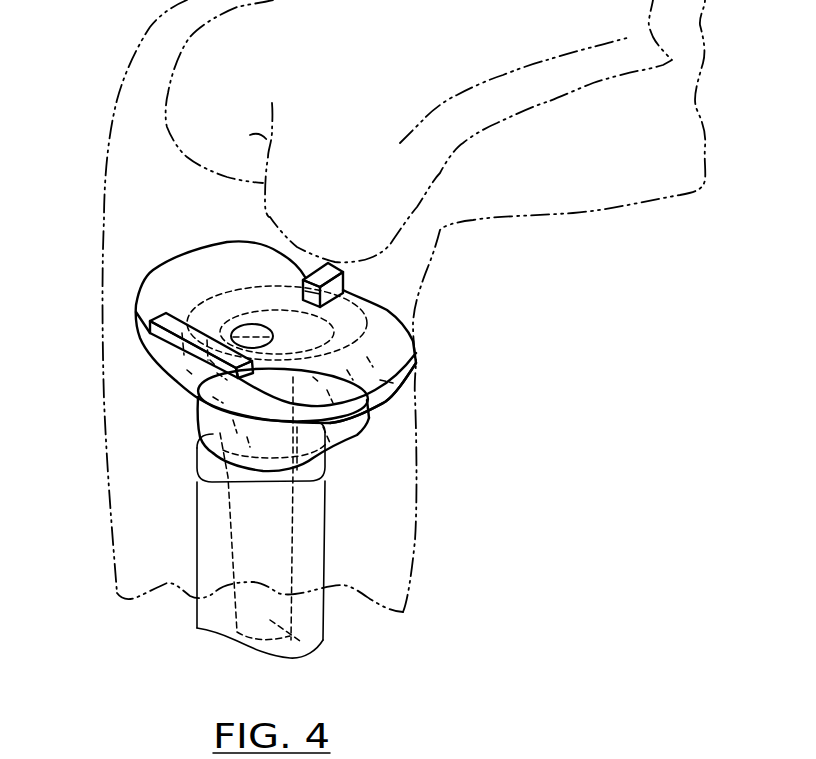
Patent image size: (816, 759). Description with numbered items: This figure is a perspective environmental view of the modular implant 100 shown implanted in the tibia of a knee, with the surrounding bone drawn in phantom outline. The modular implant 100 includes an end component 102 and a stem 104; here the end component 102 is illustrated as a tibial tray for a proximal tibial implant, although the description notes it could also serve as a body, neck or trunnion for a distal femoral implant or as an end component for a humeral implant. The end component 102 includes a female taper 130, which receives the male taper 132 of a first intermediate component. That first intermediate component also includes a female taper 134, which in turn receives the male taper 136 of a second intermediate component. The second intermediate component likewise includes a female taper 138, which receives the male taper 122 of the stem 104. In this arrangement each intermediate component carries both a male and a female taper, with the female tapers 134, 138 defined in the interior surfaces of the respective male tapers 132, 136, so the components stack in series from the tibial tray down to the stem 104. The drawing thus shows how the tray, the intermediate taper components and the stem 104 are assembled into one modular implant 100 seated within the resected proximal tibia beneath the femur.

The modular implant 100 is at (280, 435).
The end component 102 is at (219, 255).
The stem 104 is at (317, 647).
The male taper 122 is at (197, 514).
The female taper 130 is at (412, 397).
The male taper 132 is at (418, 352).
The female taper 134 is at (197, 411).
The male taper 136 is at (180, 372).
The female taper 138 is at (205, 445).